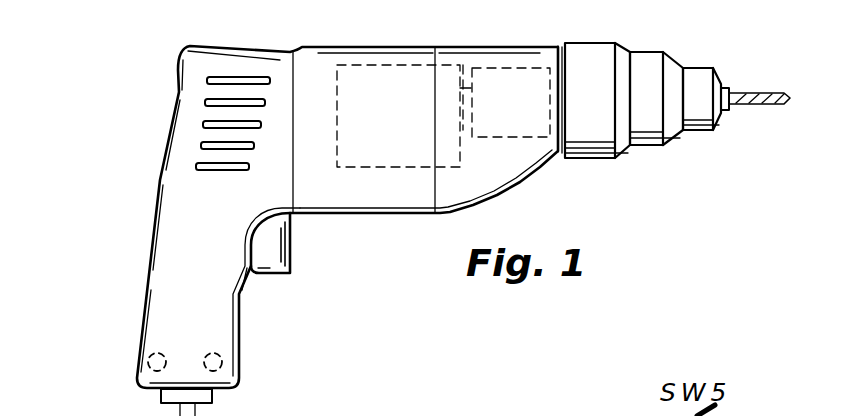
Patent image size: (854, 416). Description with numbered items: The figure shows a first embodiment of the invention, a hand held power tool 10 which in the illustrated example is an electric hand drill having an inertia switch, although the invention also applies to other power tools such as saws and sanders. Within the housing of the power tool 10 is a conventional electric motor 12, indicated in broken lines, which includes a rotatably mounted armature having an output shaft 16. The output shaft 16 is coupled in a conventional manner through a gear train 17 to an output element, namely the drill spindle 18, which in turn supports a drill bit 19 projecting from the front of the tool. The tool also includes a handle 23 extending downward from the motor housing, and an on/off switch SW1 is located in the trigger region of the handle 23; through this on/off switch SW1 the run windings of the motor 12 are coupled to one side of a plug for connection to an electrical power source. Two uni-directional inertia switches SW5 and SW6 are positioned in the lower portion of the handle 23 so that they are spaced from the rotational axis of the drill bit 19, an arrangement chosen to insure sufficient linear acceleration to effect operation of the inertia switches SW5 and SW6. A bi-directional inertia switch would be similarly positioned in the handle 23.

The hand held power tool 10 is at (570, 178).
The electric motor 12 is at (393, 66).
The output shaft 16 is at (468, 88).
The gear train 17 is at (527, 76).
The drill spindle 18 is at (720, 88).
The drill bit 19 is at (760, 105).
The handle 23 is at (243, 322).
The on/off switch SW1 is at (290, 250).
The uni-directional inertia switch SW5 is at (148, 358).
The uni-directional inertia switch SW6 is at (223, 362).